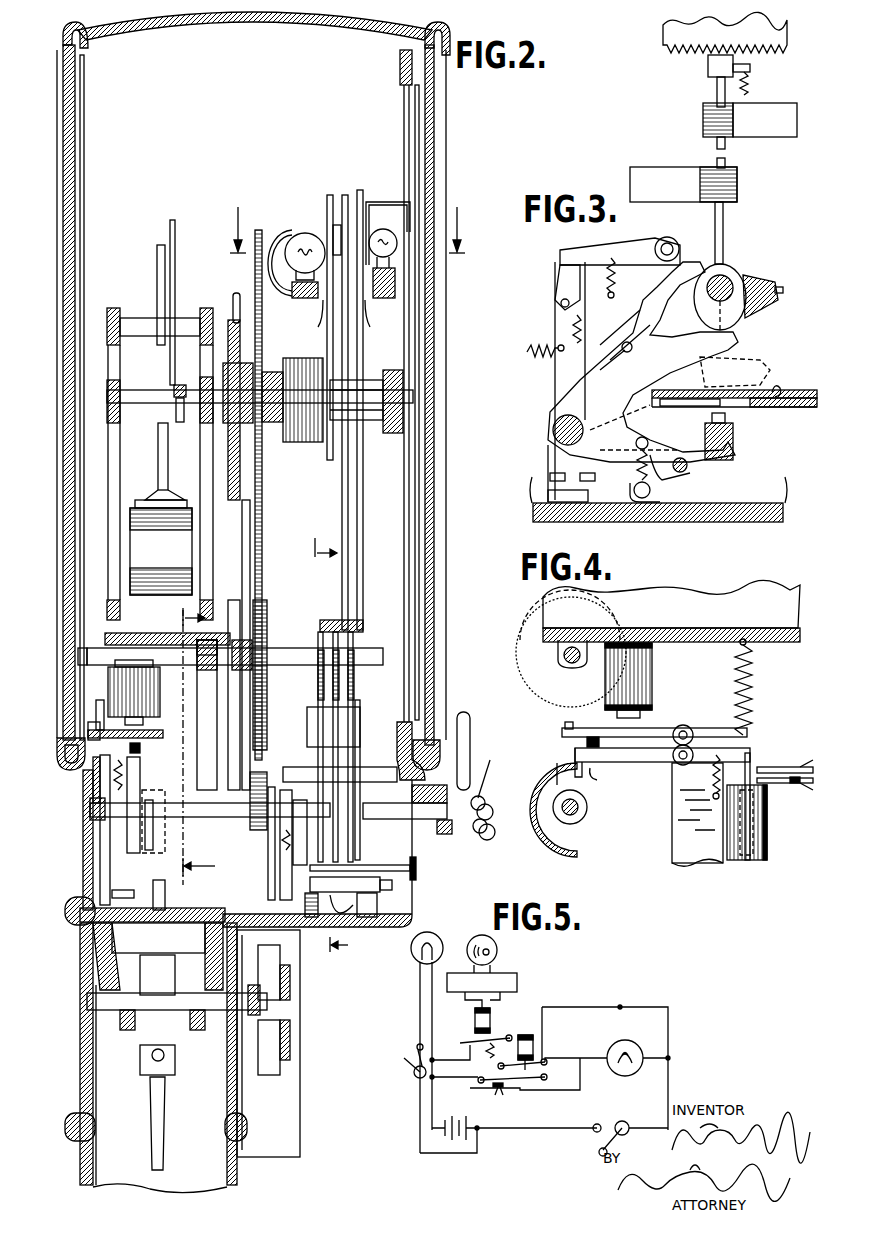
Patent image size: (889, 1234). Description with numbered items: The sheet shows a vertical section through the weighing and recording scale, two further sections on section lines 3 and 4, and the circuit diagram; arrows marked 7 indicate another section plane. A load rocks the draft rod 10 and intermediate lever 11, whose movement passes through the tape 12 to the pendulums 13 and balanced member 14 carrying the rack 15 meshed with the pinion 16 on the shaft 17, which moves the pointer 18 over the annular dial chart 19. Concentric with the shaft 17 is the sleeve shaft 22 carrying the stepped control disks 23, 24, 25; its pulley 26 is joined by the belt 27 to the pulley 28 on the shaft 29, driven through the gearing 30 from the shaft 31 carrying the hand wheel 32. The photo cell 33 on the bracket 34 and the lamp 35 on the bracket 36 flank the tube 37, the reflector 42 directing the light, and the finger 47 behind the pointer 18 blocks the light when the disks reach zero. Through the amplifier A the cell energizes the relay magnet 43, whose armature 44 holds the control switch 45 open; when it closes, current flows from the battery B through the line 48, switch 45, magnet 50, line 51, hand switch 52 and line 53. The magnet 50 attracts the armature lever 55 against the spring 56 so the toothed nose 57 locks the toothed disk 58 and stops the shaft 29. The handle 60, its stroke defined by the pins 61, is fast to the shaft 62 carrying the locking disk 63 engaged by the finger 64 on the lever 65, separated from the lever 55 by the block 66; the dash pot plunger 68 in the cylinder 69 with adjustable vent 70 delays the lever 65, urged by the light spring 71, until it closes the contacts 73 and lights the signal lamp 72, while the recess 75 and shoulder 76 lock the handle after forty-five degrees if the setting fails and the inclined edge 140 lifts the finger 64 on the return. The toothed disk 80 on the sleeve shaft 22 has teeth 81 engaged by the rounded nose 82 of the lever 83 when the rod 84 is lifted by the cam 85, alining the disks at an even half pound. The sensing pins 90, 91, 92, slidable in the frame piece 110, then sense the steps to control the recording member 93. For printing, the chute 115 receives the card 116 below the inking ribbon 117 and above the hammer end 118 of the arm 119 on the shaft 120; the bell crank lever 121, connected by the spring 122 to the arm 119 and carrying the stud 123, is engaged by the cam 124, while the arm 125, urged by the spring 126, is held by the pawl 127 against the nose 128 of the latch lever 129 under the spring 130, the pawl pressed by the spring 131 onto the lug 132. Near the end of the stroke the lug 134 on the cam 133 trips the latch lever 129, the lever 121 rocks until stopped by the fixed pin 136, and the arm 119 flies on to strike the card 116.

In FIG. 2, the section line 3— 3 is at (323, 746).
In FIG. 2, the section line 4— 4 is at (191, 745).
In FIG. 2, the section line 7- 7 is at (347, 242).
In FIG. 2, the draft rod 10 is at (162, 1100).
In FIG. 2, the intermediate lever 11 is at (162, 1035).
In FIG. 2, the tape 12 is at (168, 250).
In FIG. 2, the pendulums 13 is at (145, 555).
In FIG. 2, the balanced member 14 is at (157, 272).
In FIG. 2, the rack 15 is at (178, 385).
In FIG. 2, the pinion 16 is at (170, 416).
In FIG. 2, the indicating shaft 17 is at (140, 400).
In FIG. 2, the pointer 18 is at (420, 143).
In FIG. 2, the annular dial chart 19 is at (412, 97).
In FIG. 2, the sleeve shaft 22 is at (368, 423).
In FIG. 2, the stepped control disk 23 is at (360, 190).
In FIG. 2, the stepped control disk 24 is at (346, 195).
In FIG. 2, the stepped control disk 25 is at (330, 205).
In FIG. 2, the pulley 26 is at (232, 298).
In FIG. 2, the belt 27 is at (240, 525).
In FIG. 2, the pulley 28 is at (250, 552).
In FIG. 2, the shaft 29 is at (150, 655).
In FIG. 4, the shaft 29 is at (565, 655).
In FIG. 2, the gearing 30 is at (267, 720).
In FIG. 2, the shaft 31 is at (370, 775).
In FIG. 2, the hand wheel 32 is at (470, 742).
In FIG. 2, the photo cell 33 is at (386, 225).
In FIG. 5, the photo cell 33 is at (498, 950).
In FIG. 2, the bracket 34 is at (366, 312).
In FIG. 2, the lamp 35 is at (301, 232).
In FIG. 5, the lamp 35 is at (415, 958).
In FIG. 2, the bracket 36 is at (322, 312).
In FIG. 2, the tube 37 is at (333, 230).
In FIG. 2, the reflector 42 is at (279, 237).
In FIG. 5, the relay magnet 43 is at (491, 1020).
In FIG. 5, the armature 44 is at (470, 1040).
In FIG. 5, the control switch 45 is at (455, 1046).
In FIG. 2, the finger 47 is at (375, 205).
In FIG. 5, the line 48 is at (432, 1100).
In FIG. 2, the magnet 50 is at (152, 700).
In FIG. 4, the magnet 50 is at (652, 680).
In FIG. 5, the magnet 50 is at (535, 1046).
In FIG. 5, the line 51 is at (624, 1007).
In FIG. 5, the hand switch 52 is at (614, 1128).
In FIG. 5, the line 53 is at (532, 1128).
In FIG. 2, the armature lever 55 is at (150, 735).
In FIG. 4, the armature lever 55 is at (665, 730).
In FIG. 5, the armature lever 55 is at (548, 1064).
In FIG. 4, the spring 56 is at (750, 720).
In FIG. 2, the toothed nose 57 is at (100, 740).
In FIG. 4, the toothed nose 57 is at (565, 725).
In FIG. 2, the toothed disk 58 is at (100, 700).
In FIG. 4, the toothed disk 58 is at (530, 685).
In FIG. 2, the handle 60 is at (487, 805).
In FIG. 4, the handle 60 is at (485, 796).
In FIG. 2, the pins 61 is at (450, 834).
In FIG. 2, the shaft 62 is at (240, 818).
In FIG. 3, the shaft 62 is at (726, 280).
In FIG. 4, the shaft 62 is at (585, 810).
In FIG. 2, the locking disk 63 is at (130, 838).
In FIG. 4, the locking disk 63 is at (578, 848).
In FIG. 2, the locking finger 64 is at (120, 770).
In FIG. 4, the locking finger 64 is at (583, 772).
In FIG. 4, the lever 65 is at (658, 762).
In FIG. 5, the lever 65 is at (548, 1078).
In FIG. 4, the block 66 is at (596, 760).
In FIG. 2, the dash pot plunger 68 is at (150, 785).
In FIG. 4, the dash pot plunger 68 is at (762, 825).
In FIG. 2, the cylinder 69 is at (148, 840).
In FIG. 4, the cylinder 69 is at (745, 860).
In FIG. 2, the adjustable vent 70 is at (150, 865).
In FIG. 4, the adjustable vent 70 is at (760, 862).
In FIG. 2, the light spring 71 is at (118, 780).
In FIG. 4, the light spring 71 is at (719, 775).
In FIG. 5, the signal lamp 72 is at (631, 1043).
In FIG. 4, the contacts 73 is at (775, 770).
In FIG. 5, the contacts 73 is at (492, 1088).
In FIG. 4, the recess 75 is at (556, 765).
In FIG. 4, the shoulder 76 is at (545, 780).
In FIG. 2, the toothed disk 80 is at (262, 467).
In FIG. 3, the toothed disk 80 is at (672, 28).
In FIG. 3, the teeth 81 is at (760, 47).
In FIG. 3, the rounded nose 82 is at (707, 62).
In FIG. 3, the lever 83 is at (715, 80).
In FIG. 2, the depending rod 84 is at (275, 648).
In FIG. 3, the depending rod 84 is at (741, 152).
In FIG. 3, the cam 85 is at (723, 242).
In FIG. 2, the sensing pin 90 is at (354, 660).
In FIG. 2, the sensing pin 91 is at (360, 630).
In FIG. 2, the sensing pin 92 is at (325, 640).
In FIG. 2, the recording member 93 is at (405, 801).
In FIG. 2, the frame piece 110 is at (352, 712).
In FIG. 2, the chute 115 is at (418, 872).
In FIG. 3, the chute 115 is at (802, 408).
In FIG. 3, the card 116 is at (690, 406).
In FIG. 2, the inking ribbon 117 is at (358, 862).
In FIG. 3, the inking ribbon 117 is at (775, 397).
In FIG. 3, the hammer end 118 is at (733, 440).
In FIG. 3, the arm 119 is at (722, 462).
In FIG. 2, the shaft 120 is at (346, 926).
In FIG. 3, the shaft 120 is at (553, 430).
In FIG. 2, the bell crank lever 121 is at (292, 872).
In FIG. 3, the bell crank lever 121 is at (612, 385).
In FIG. 3, the light spring 122 is at (657, 485).
In FIG. 3, the stud 123 is at (690, 470).
In FIG. 3, the cam 124 is at (735, 318).
In FIG. 2, the arm 125 is at (282, 857).
In FIG. 3, the arm 125 is at (556, 320).
In FIG. 3, the spring 126 is at (527, 351).
In FIG. 3, the pawl 127 is at (566, 283).
In FIG. 3, the nose 128 is at (560, 256).
In FIG. 3, the latch lever 129 is at (594, 252).
In FIG. 3, the spring 130 is at (615, 277).
In FIG. 3, the spring 131 is at (573, 328).
In FIG. 3, the lug 132 is at (561, 305).
In FIG. 3, the cam 133 is at (752, 280).
In FIG. 3, the lug 134 is at (780, 291).
In FIG. 3, the fixed pin 136 is at (627, 342).
In FIG. 4, the inclined edge 140 is at (580, 760).
In FIG. 5, the amplifier A is at (518, 983).
In FIG. 5, the battery B is at (450, 1120).